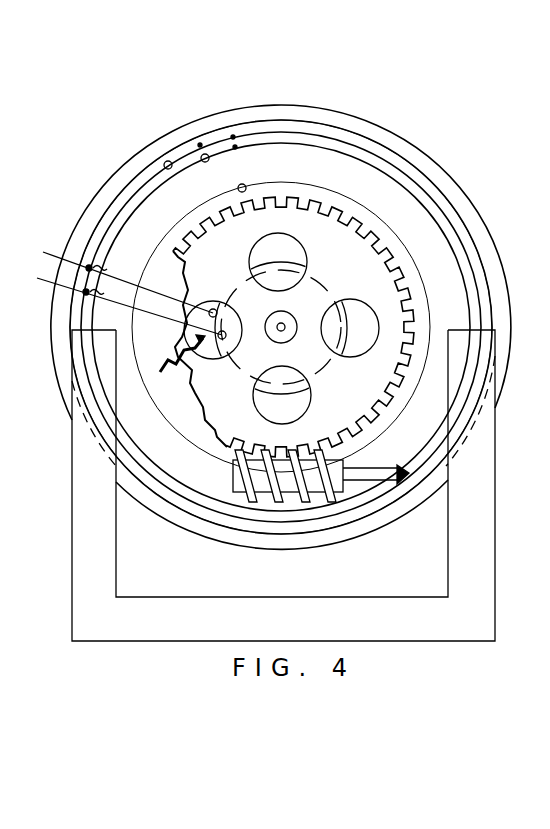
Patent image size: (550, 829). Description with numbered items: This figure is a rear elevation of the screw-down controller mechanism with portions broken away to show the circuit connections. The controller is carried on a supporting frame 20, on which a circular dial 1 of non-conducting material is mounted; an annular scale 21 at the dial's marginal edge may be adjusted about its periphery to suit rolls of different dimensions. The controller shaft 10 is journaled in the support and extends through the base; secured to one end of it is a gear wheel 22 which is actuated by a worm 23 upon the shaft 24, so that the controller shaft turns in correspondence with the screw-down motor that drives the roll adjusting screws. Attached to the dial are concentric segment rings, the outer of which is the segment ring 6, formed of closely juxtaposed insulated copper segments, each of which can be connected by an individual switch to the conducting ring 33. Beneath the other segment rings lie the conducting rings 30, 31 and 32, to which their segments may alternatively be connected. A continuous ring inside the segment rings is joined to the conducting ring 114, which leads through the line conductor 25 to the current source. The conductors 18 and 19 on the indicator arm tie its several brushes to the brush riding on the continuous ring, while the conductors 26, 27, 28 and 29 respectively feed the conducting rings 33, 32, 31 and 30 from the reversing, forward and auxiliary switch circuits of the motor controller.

The dial 1 is at (172, 455).
The segment ring 6 is at (108, 277).
The shaft 10 is at (287, 323).
The conductor 18 is at (246, 327).
The conductor 19 is at (0, 294).
The supporting frame 20 is at (107, 580).
The scale 21 is at (97, 213).
The gear wheel 22 is at (387, 252).
The worm 23 is at (315, 500).
The shaft 24 is at (405, 473).
The conductor 25 is at (185, 316).
The conductor 26 is at (116, 265).
The conductor 27 is at (242, 184).
The conductor 28 is at (205, 154).
The conductor 29 is at (168, 161).
The conducting ring 30 is at (135, 197).
The conducting ring 31 is at (162, 183).
The conducting ring 32 is at (148, 400).
The conducting ring 33 is at (196, 341).
The conducting ring 114 is at (240, 319).